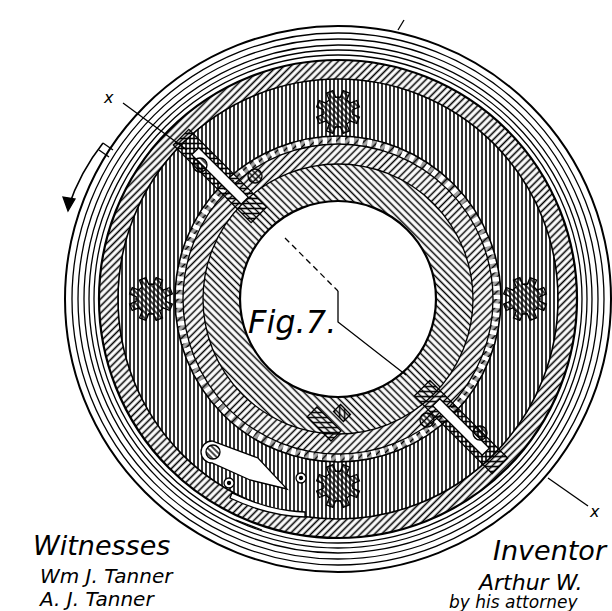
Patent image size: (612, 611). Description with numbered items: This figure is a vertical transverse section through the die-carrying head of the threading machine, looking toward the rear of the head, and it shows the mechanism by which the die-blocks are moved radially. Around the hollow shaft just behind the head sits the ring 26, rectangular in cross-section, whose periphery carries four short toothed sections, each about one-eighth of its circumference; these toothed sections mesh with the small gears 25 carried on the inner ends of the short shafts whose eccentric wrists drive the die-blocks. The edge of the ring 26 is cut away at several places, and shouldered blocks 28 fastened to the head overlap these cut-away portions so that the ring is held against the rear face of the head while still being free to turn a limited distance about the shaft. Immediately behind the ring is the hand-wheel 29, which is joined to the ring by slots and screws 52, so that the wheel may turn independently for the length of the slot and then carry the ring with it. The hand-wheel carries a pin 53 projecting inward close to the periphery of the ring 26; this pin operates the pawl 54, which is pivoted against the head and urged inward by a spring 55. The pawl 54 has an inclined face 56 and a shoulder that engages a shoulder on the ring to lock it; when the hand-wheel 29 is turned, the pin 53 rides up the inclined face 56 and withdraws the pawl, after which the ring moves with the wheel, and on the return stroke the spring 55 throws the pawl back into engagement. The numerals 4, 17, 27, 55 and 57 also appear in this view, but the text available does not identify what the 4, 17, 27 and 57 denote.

The hub ring 4 is at (250, 258).
The shaft 17 is at (400, 28).
The small gear 25 is at (385, 70).
The ring 26 is at (180, 230).
The outer hatched ring 27 is at (278, 70).
The shouldered blocks 28 is at (191, 145).
The hand-wheel 29 is at (470, 78).
The slots and screws 52 is at (218, 387).
The pin 53 is at (320, 438).
The pawl 54 is at (222, 458).
The spring 55 is at (268, 518).
The inclined face 56 is at (338, 432).
The link 57 is at (236, 522).